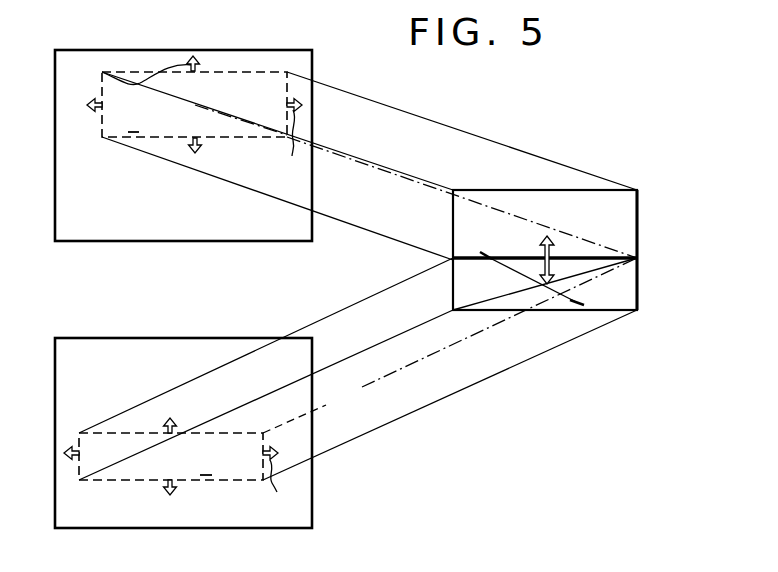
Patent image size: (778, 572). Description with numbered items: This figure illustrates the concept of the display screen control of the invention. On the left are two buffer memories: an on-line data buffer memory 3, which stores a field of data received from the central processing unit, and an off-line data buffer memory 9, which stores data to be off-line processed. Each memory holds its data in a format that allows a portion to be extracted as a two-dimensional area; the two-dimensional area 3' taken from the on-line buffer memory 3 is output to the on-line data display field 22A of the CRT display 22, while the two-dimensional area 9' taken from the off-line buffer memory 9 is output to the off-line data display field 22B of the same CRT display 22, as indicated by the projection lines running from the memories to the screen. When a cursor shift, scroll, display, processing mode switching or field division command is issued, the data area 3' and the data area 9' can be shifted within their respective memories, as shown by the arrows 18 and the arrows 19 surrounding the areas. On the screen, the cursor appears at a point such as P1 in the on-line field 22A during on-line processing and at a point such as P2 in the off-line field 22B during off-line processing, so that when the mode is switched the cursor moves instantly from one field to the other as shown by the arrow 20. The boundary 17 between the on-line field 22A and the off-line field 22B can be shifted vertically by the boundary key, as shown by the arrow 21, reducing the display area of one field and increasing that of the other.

The on-line data buffer memory 3 is at (183, 126).
The two-dimensional area 3' is at (194, 73).
The off-line data buffer memory 9 is at (183, 409).
The two-dimensional area 9' is at (358, 369).
The boundary 17 is at (571, 257).
The arrows 18 is at (193, 65).
The arrows 19 is at (167, 424).
The arrow 20 is at (520, 285).
The arrow 21 is at (540, 246).
The CRT display 22 is at (606, 188).
The on-line data display field 22A is at (632, 222).
The off-line data display field 22B is at (632, 283).
The point P1 is at (486, 256).
The point P2 is at (577, 304).